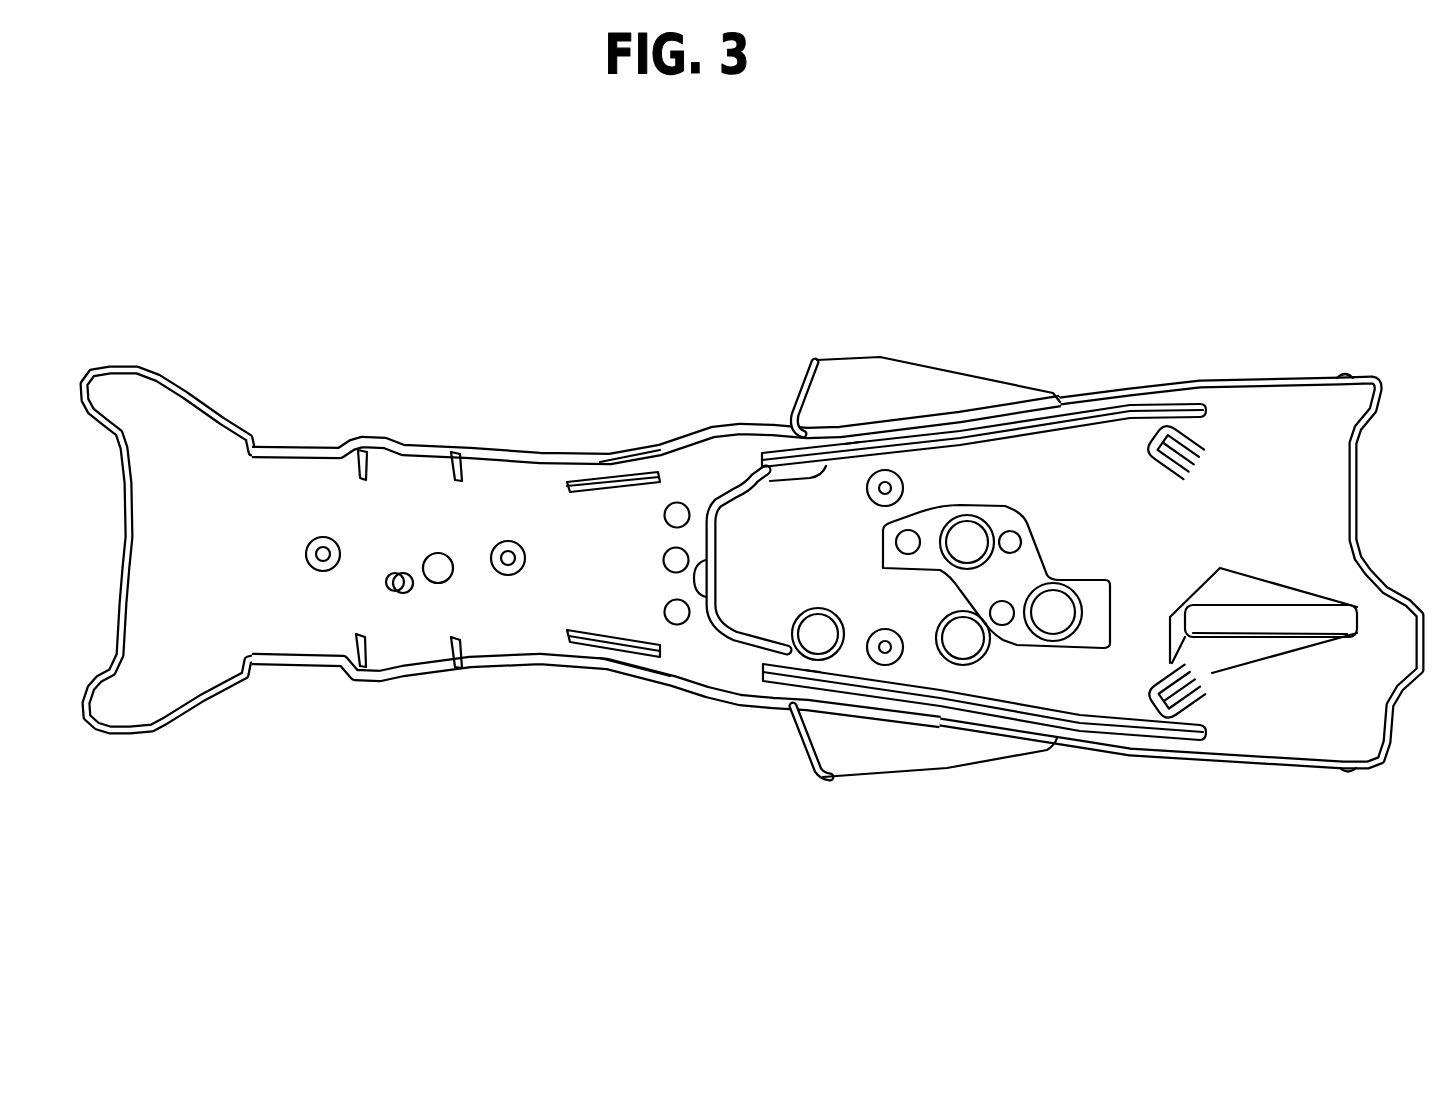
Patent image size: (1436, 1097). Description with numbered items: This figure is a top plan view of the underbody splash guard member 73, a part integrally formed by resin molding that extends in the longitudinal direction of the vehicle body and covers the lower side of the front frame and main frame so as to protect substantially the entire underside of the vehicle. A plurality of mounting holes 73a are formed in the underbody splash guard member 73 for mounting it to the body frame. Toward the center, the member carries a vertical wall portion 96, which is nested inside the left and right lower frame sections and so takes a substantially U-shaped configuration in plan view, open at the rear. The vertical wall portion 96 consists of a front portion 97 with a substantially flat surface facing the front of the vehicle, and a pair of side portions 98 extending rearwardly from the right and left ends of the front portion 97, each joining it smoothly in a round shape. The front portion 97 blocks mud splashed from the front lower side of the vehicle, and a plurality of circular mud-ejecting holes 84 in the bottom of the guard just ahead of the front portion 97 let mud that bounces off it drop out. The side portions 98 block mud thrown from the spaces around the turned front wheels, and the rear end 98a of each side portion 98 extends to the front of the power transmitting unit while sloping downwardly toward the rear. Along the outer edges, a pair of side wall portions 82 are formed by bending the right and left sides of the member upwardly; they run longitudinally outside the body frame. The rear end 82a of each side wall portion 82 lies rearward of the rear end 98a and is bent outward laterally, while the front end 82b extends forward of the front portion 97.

The underbody splash guard member 73 is at (713, 429).
The mounting holes 73a is at (323, 537).
The side wall portions 82 is at (663, 447).
The rear end of side wall portion 82a is at (817, 360).
The front end of side wall portion 82b is at (607, 468).
The mud-ejecting holes 84 is at (668, 607).
The vertical wall portion 96 is at (749, 467).
The front portion 97 is at (698, 605).
The side portions 98 is at (780, 456).
The rear end of side portion 98a is at (853, 447).